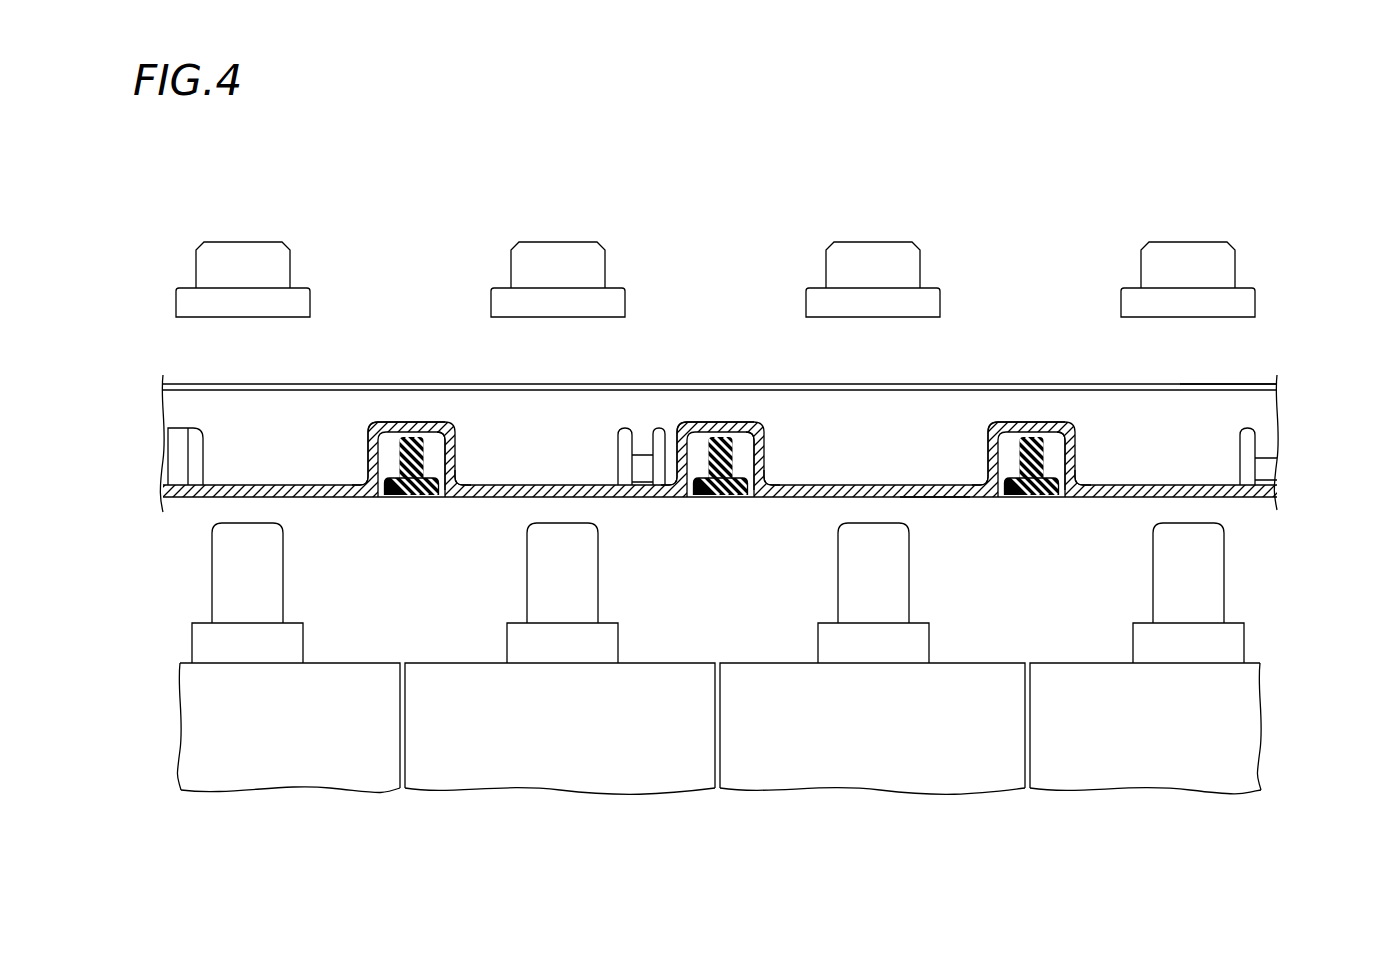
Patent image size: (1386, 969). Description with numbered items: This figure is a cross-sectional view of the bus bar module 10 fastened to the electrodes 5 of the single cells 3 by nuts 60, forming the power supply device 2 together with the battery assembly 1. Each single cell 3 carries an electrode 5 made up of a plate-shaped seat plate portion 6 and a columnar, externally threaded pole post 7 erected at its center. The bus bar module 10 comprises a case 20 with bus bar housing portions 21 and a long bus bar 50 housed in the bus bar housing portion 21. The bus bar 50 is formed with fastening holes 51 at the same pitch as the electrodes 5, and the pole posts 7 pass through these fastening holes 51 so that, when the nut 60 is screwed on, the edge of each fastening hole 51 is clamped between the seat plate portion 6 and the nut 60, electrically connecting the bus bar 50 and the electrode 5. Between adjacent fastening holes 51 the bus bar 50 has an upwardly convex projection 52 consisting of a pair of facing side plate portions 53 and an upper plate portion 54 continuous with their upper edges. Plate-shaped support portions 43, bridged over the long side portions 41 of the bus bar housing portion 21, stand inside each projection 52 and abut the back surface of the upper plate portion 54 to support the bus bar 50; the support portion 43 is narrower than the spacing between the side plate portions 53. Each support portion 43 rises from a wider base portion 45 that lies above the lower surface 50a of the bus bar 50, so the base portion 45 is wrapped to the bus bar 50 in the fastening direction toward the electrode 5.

The battery assembly 1 is at (1273, 648).
The power supply device 2 is at (1285, 405).
The single cell 3 is at (285, 768).
The electrode 5 is at (714, 593).
The seat plate portion 6 is at (192, 641).
The pole post 7 is at (218, 590).
The bus bar module 10 is at (933, 375).
The case 20 is at (190, 384).
The bus bar housing portion 21 is at (1230, 385).
The long side portion 41 is at (570, 415).
The support portion 43 is at (420, 437).
The base portion 45 is at (393, 497).
The bus bar 50 is at (1255, 497).
The lower surface 50a is at (935, 497).
The fastening hole 51 is at (218, 497).
The projection 52 is at (452, 432).
The side plate portion 53 is at (366, 490).
The upper plate portion 54 is at (384, 422).
The nut 60 is at (287, 245).